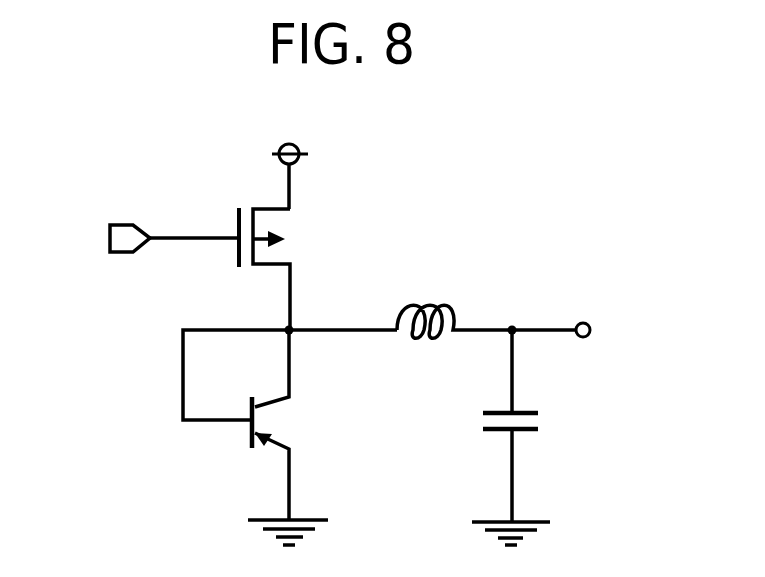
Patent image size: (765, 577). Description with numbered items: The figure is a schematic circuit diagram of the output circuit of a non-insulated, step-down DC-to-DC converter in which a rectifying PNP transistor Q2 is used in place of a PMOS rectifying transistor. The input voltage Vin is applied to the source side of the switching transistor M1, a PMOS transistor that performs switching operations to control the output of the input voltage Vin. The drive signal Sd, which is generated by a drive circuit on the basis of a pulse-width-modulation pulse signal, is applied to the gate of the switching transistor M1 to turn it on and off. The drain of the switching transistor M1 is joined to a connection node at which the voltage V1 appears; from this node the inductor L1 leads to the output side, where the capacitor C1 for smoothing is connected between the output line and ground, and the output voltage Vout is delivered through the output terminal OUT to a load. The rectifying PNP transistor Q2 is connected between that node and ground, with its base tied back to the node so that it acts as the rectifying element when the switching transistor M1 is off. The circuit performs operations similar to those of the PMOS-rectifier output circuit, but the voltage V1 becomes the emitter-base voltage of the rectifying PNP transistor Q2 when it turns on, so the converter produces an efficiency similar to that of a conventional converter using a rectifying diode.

The input voltage Vin is at (290, 160).
The switching transistor M1 is at (264, 253).
The drive signal Sd is at (154, 240).
The voltage V1 is at (293, 333).
The rectifying PNP transistor Q2 is at (255, 437).
The inductor L1 is at (454, 306).
The output voltage Vout is at (561, 313).
The output terminal OUT is at (583, 338).
The capacitor for smoothing C1 is at (496, 437).